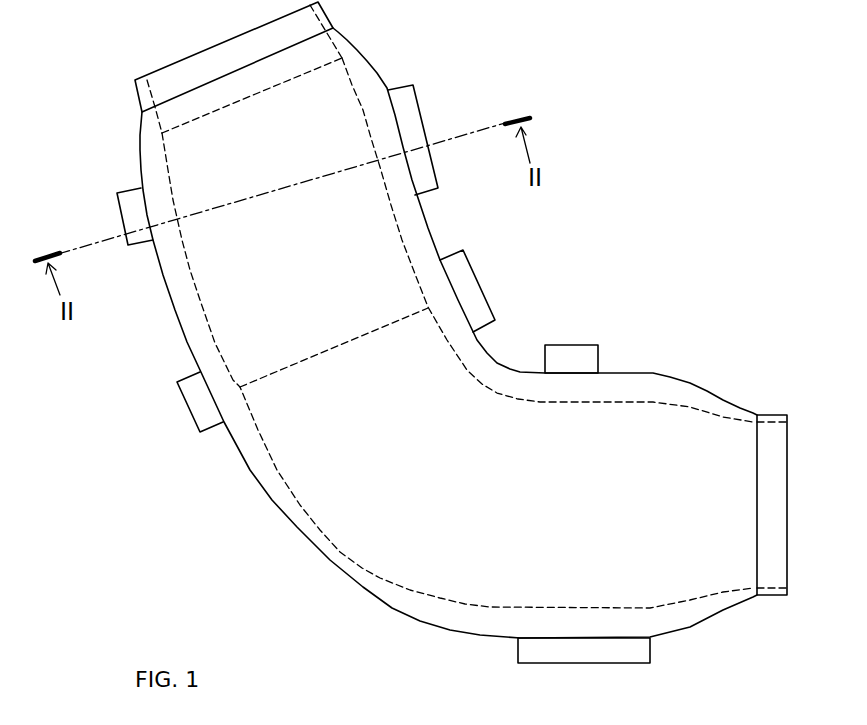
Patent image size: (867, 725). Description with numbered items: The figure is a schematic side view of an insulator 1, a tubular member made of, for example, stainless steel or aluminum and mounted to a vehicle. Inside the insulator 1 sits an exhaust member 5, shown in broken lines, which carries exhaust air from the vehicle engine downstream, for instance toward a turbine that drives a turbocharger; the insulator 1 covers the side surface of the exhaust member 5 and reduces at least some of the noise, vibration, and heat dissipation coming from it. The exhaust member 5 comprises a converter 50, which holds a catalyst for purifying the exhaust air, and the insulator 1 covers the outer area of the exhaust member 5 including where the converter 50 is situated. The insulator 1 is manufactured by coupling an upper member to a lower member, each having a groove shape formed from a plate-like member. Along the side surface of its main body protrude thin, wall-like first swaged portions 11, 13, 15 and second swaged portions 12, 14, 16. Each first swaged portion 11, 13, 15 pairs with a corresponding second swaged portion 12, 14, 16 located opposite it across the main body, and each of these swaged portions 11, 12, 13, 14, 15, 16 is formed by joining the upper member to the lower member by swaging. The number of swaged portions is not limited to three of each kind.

The insulator 1 is at (86, 80).
The exhaust member 5 is at (335, 39).
The converter 50 is at (193, 161).
The first swaged portion 11 is at (410, 122).
The second swaged portion 12 is at (128, 204).
The first swaged portion 13 is at (472, 298).
The second swaged portion 14 is at (202, 415).
The first swaged portion 15 is at (637, 652).
The second swaged portion 16 is at (585, 357).